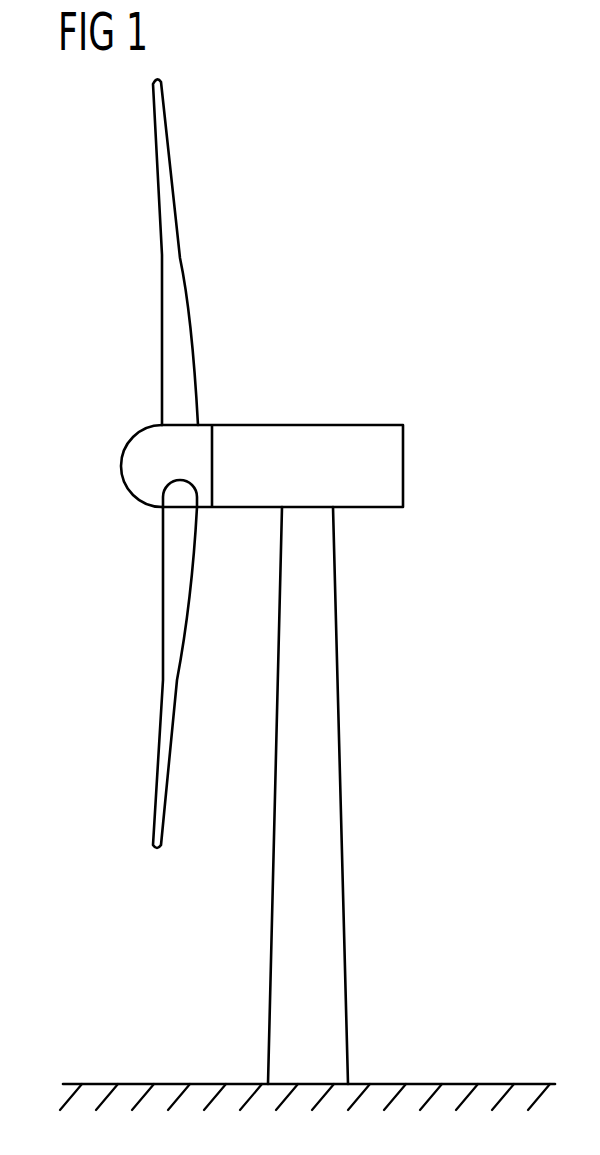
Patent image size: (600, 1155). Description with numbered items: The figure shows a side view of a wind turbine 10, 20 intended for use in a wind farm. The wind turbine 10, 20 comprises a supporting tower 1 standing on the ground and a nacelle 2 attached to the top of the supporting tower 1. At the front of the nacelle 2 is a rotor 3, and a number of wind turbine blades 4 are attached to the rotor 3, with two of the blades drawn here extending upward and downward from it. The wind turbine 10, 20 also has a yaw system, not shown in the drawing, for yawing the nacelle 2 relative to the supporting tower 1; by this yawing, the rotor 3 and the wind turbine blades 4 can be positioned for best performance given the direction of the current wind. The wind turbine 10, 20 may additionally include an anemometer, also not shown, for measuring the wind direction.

The supporting tower 1 is at (342, 826).
The nacelle 2 is at (307, 423).
The rotor 3 is at (122, 465).
The wind turbine blades 4 is at (162, 340).
The wind turbine 10 is at (350, 315).
The wind turbine 20 is at (307, 594).